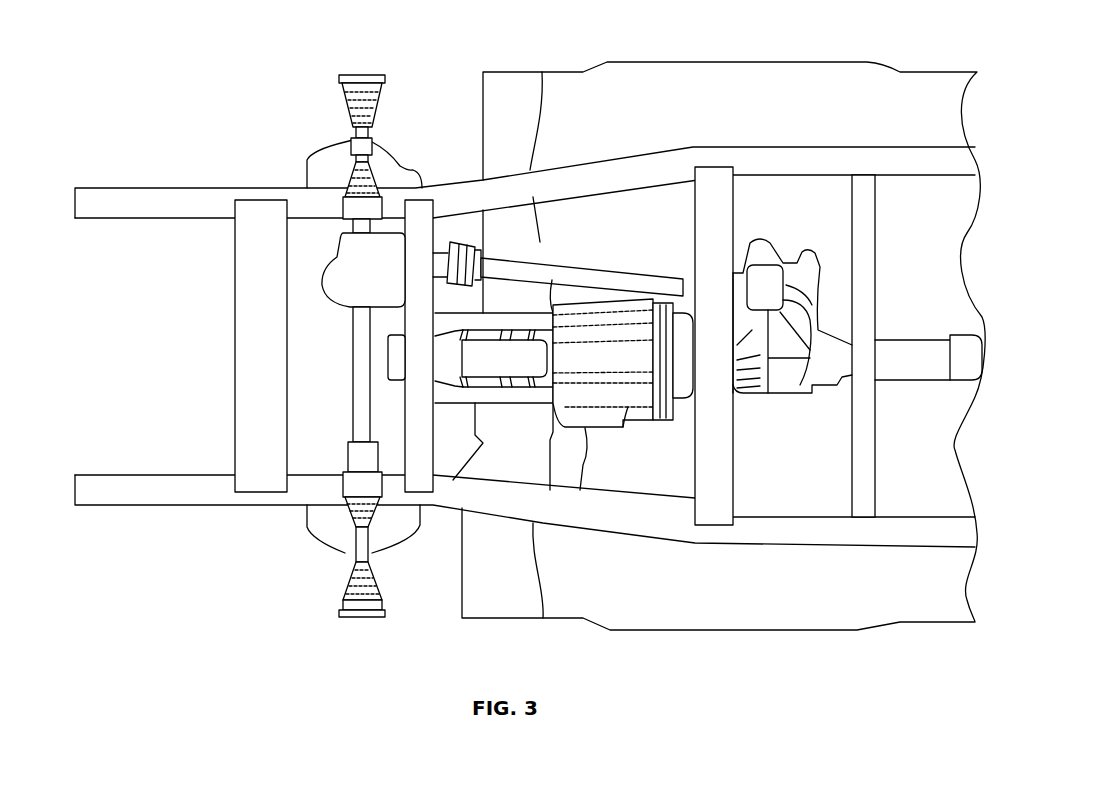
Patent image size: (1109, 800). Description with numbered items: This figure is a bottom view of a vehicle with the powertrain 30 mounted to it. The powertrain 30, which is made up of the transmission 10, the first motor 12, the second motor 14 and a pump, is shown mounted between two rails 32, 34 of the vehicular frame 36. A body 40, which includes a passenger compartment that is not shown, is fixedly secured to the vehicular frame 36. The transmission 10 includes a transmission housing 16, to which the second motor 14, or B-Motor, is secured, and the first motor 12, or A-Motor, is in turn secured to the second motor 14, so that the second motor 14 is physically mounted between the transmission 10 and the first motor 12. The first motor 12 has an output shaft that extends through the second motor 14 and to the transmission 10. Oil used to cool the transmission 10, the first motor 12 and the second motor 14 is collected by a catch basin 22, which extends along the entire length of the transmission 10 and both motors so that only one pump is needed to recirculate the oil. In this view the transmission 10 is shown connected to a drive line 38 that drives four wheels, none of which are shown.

The transmission 10 is at (555, 384).
The first motor 12 is at (453, 403).
The second motor 14 is at (518, 403).
The transmission housing 16 is at (585, 428).
The catch basin 22 is at (515, 338).
The powertrain 30 is at (648, 432).
The rail 32 is at (157, 475).
The rail 34 is at (148, 188).
The vehicular frame 36 is at (260, 186).
The drive line 38 is at (793, 263).
The body 40 is at (513, 72).